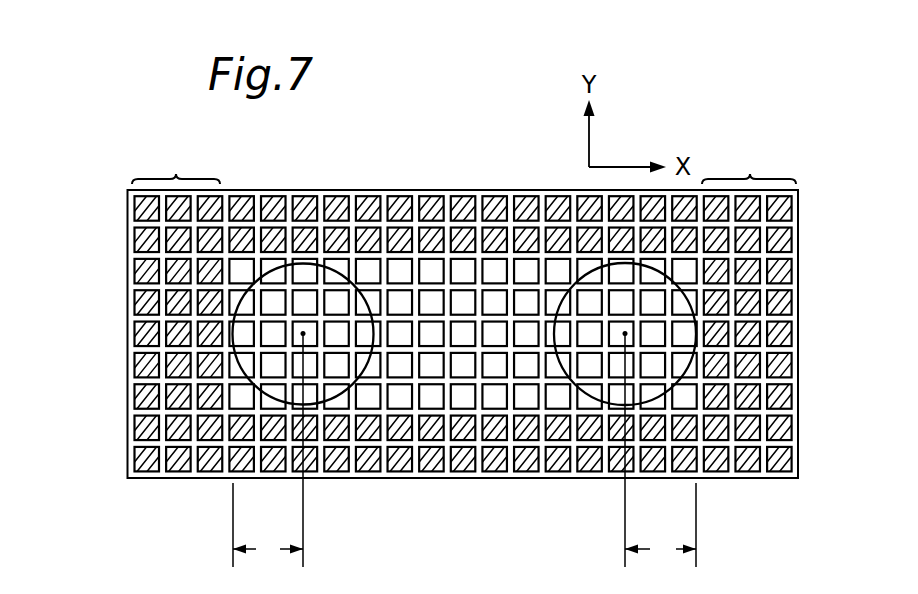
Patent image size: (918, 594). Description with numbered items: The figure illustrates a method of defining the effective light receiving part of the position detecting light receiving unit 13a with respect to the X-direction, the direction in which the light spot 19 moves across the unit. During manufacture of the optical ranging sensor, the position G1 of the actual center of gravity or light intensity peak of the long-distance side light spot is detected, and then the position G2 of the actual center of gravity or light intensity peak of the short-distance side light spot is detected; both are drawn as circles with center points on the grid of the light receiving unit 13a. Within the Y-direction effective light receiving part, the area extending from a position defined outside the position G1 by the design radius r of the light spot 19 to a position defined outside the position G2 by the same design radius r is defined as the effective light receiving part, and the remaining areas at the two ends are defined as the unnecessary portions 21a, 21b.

The position detecting light receiving unit 13a is at (487, 189).
The light spot 19 is at (328, 398).
The unnecessary portion 21a is at (176, 164).
The unnecessary portion 21b is at (749, 164).
The position of actual center of gravity or light intensity peak of long-distance si G1 is at (303, 334).
The position of actual center of gravity or light intensity peak of short-distance s G2 is at (625, 334).
The design radius of the light spot r is at (464, 451).